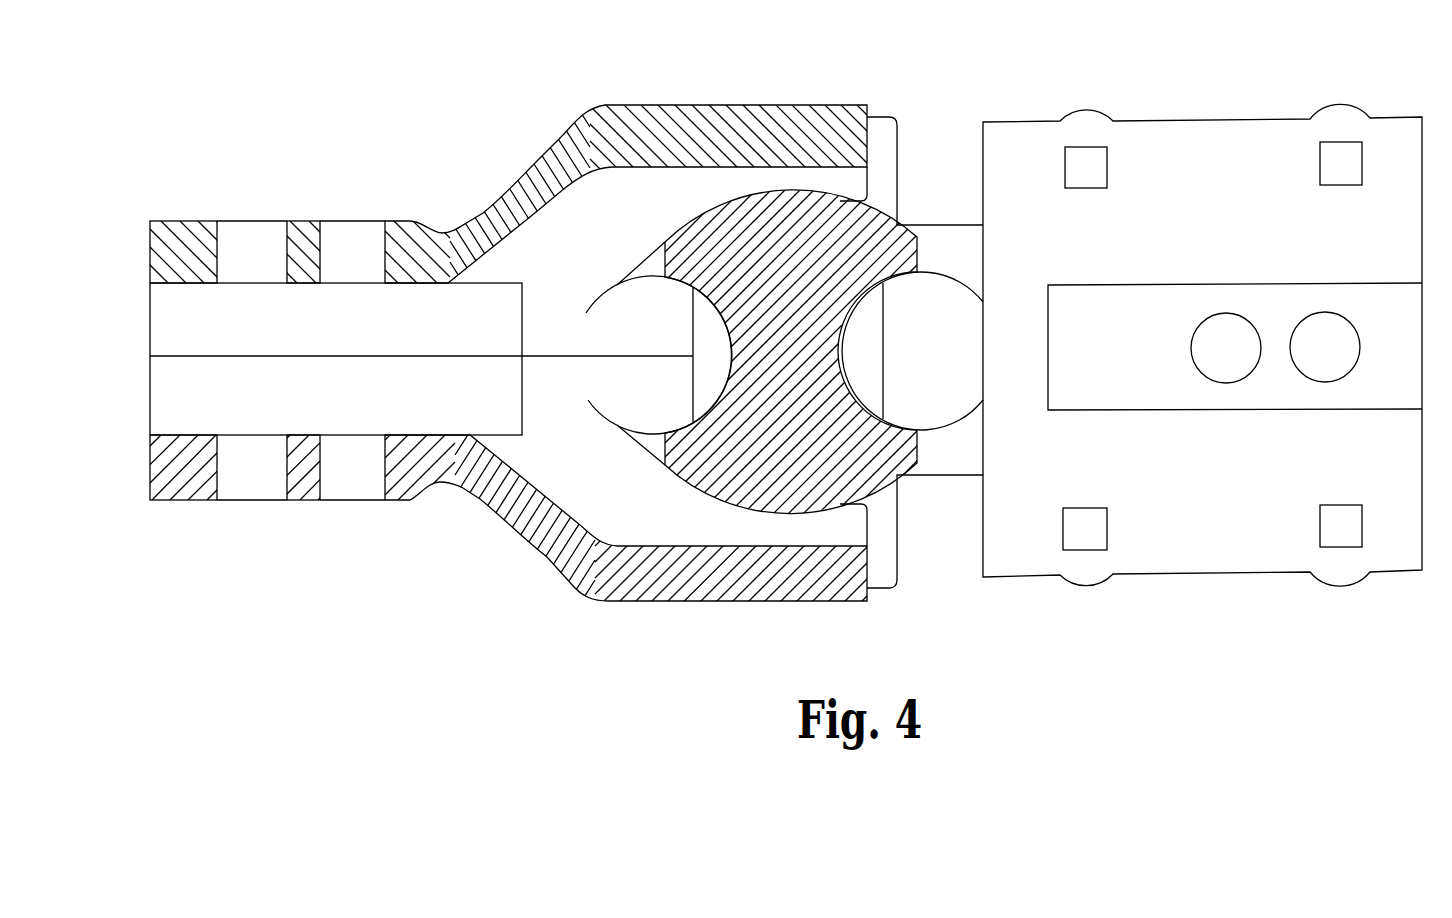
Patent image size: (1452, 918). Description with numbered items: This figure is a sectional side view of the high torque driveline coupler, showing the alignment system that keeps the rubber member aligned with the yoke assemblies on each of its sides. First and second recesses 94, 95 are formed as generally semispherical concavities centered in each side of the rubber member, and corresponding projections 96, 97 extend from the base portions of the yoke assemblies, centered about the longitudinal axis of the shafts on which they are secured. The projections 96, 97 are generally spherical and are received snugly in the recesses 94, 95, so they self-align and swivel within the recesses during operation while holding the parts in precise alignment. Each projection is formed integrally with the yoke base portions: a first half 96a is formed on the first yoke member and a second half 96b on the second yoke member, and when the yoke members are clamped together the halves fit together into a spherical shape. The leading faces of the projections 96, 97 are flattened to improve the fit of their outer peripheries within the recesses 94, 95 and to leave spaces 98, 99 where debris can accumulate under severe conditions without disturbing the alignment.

The first recess 94 is at (663, 410).
The second recess 95 is at (878, 393).
The first projection 96 is at (660, 308).
The first half of projection 96a is at (627, 318).
The second half of projection 96b is at (633, 392).
The second projection 97 is at (943, 315).
The space 98 is at (712, 333).
The space 99 is at (870, 324).